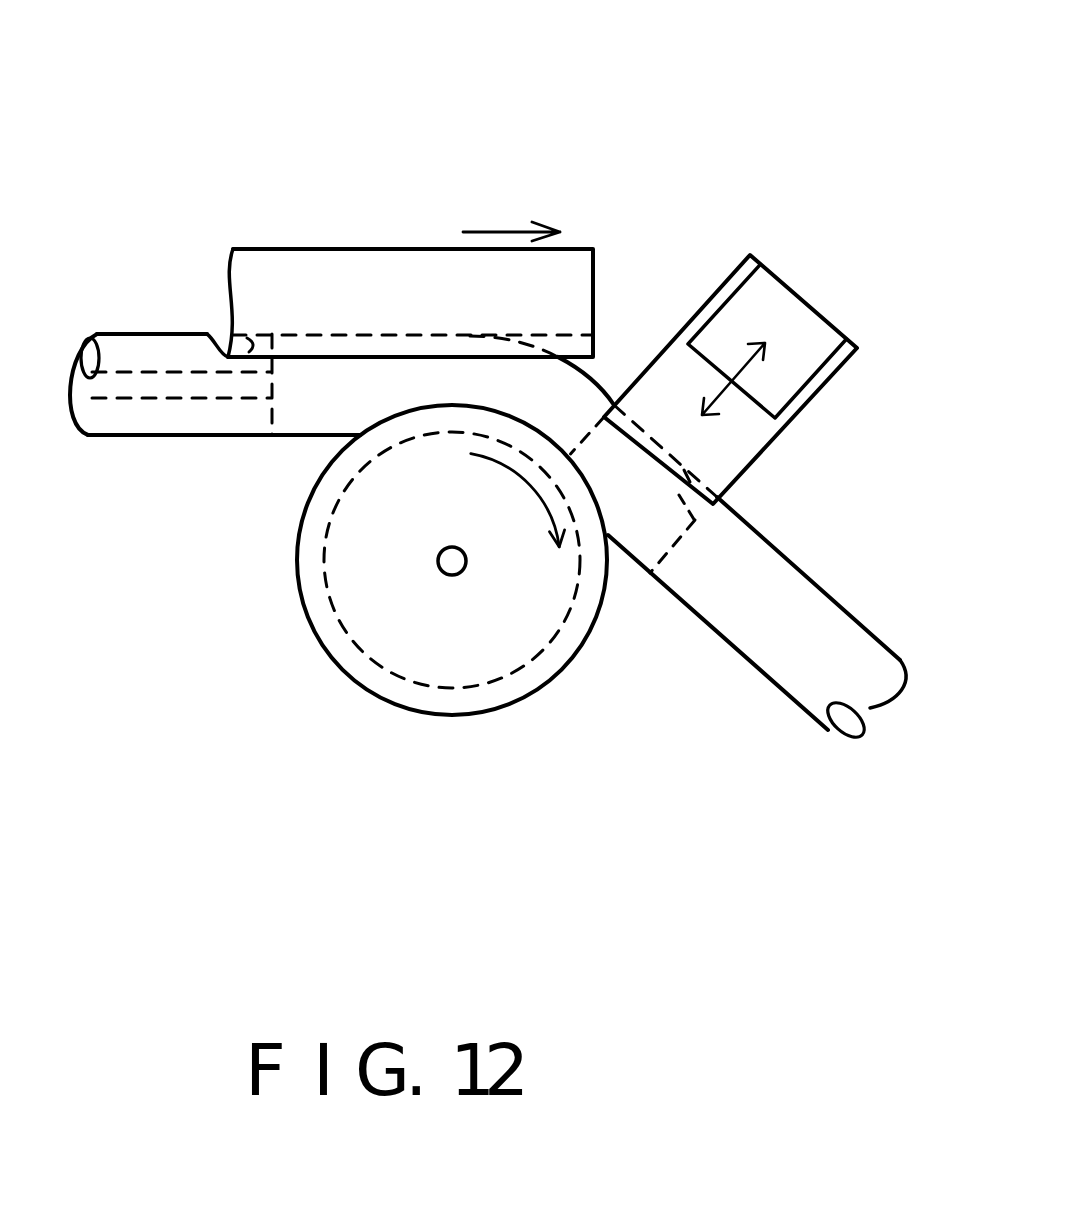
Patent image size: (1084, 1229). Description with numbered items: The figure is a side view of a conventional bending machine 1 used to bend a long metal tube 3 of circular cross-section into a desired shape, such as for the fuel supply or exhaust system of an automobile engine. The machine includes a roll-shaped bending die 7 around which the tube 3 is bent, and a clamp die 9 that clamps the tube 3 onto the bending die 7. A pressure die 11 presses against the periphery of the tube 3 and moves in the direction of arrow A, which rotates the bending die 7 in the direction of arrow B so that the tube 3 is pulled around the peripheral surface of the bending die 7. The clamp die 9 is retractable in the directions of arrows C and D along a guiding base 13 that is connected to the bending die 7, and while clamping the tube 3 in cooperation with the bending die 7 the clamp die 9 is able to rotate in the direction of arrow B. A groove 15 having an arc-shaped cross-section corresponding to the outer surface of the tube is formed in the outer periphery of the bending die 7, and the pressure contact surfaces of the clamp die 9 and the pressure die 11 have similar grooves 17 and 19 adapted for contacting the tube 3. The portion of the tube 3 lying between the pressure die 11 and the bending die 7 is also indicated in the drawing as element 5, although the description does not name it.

The bending machine 1 is at (622, 230).
The tube 3 is at (122, 435).
The tube portion under pressing member 5 is at (400, 368).
The roll-shaped bending die 7 is at (363, 685).
The clamp die 9 is at (762, 448).
The pressure die 11 is at (276, 268).
The guiding base 13 is at (793, 302).
The groove 15 is at (473, 684).
The groove 17 is at (695, 520).
The groove 19 is at (198, 325).